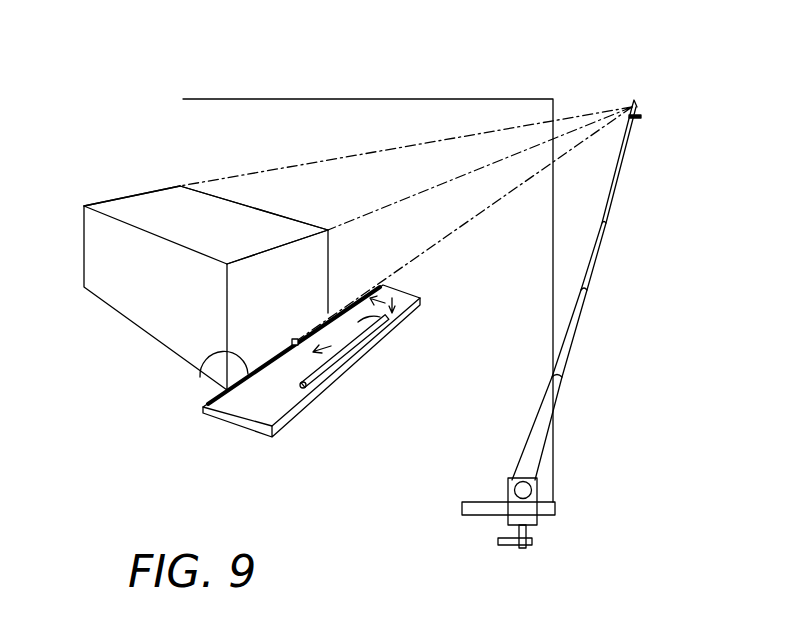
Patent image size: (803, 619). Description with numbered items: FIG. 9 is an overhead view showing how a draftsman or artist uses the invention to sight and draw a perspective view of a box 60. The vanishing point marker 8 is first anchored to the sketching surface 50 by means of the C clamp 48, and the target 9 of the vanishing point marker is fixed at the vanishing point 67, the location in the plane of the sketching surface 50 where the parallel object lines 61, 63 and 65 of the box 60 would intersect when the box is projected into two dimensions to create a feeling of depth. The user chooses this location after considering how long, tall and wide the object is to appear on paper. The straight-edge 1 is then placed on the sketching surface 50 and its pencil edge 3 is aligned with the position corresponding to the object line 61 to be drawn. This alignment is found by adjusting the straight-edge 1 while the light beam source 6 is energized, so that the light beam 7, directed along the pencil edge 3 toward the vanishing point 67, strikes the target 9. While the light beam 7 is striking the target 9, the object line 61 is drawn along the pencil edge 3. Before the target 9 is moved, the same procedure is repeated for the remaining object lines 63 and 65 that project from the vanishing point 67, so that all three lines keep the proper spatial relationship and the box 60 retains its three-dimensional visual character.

The straight-edge 1 is at (278, 402).
The pencil edge 3 is at (360, 291).
The light beam source 6 is at (333, 361).
The light beam 7 is at (408, 320).
The vanishing point marker 8 is at (572, 322).
The target 9 is at (635, 100).
The C clamp 48 is at (508, 522).
The sketching surface 50 is at (455, 393).
The box 60 is at (84, 287).
The object line 61 is at (200, 377).
The object line 63 is at (270, 251).
The object line 65 is at (107, 201).
The vanishing point 67 is at (633, 100).